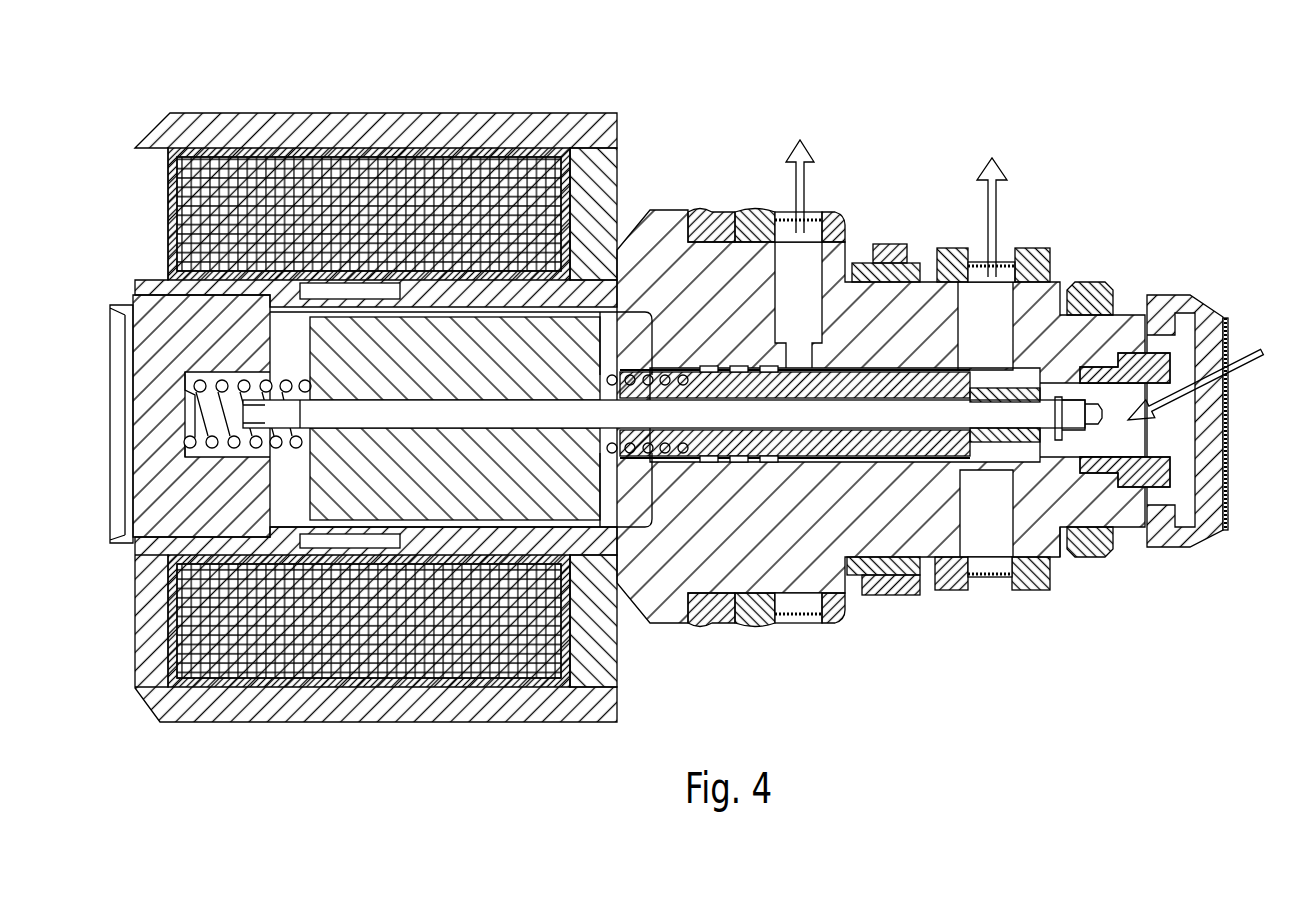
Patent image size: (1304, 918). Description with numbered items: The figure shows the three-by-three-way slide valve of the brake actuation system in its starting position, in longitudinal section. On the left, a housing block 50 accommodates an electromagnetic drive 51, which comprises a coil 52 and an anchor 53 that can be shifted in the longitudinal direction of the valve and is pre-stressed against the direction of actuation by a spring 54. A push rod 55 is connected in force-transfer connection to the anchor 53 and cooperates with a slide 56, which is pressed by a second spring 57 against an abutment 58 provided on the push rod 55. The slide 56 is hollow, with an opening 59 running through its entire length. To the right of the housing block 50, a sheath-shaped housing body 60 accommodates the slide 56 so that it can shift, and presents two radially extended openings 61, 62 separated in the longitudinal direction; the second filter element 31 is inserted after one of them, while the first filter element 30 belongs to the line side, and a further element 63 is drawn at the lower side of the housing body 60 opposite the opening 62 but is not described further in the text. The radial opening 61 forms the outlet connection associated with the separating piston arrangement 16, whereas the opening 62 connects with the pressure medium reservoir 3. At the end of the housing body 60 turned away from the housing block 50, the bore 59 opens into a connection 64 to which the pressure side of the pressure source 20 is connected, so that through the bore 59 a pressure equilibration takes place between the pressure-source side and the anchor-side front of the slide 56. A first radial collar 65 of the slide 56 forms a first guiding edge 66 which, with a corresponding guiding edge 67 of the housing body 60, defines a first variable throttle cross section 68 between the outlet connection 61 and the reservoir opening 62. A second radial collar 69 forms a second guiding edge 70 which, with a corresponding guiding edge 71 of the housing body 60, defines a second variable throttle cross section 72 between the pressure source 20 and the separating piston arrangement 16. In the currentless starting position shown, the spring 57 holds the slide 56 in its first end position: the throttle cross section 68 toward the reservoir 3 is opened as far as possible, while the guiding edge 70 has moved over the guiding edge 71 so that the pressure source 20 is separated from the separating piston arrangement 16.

The pressure medium reservoir 3 is at (800, 168).
The separating piston arrangement 16 is at (992, 202).
The pressure source 20 is at (1212, 376).
The first filter element 30 is at (1228, 394).
The second filter element 31 is at (963, 565).
The housing block 50 is at (437, 117).
The electromagnetic drive 51 is at (492, 218).
The coil 52 is at (292, 165).
The anchor 53 is at (487, 500).
The spring 54 is at (217, 390).
The push rod 55 is at (583, 420).
The slide 56 is at (740, 462).
The second spring 57 is at (630, 375).
The abutment 58 is at (1098, 548).
The opening 59 is at (890, 430).
The sheath-shaped housing body 60 is at (1056, 280).
The radial opening 61 is at (988, 340).
The radial opening 62 is at (782, 290).
The lower plug 63 is at (796, 625).
The connection 64 is at (1140, 445).
The first radial collar 65 is at (1000, 470).
The first guiding edge 66 is at (950, 266).
The guiding edge 67 is at (955, 367).
The first variable throttle cross section 68 is at (975, 470).
The second radial collar 69 is at (1040, 545).
The second guiding edge 70 is at (1092, 303).
The guiding edge 71 is at (1028, 265).
The second variable throttle cross section 72 is at (1028, 592).